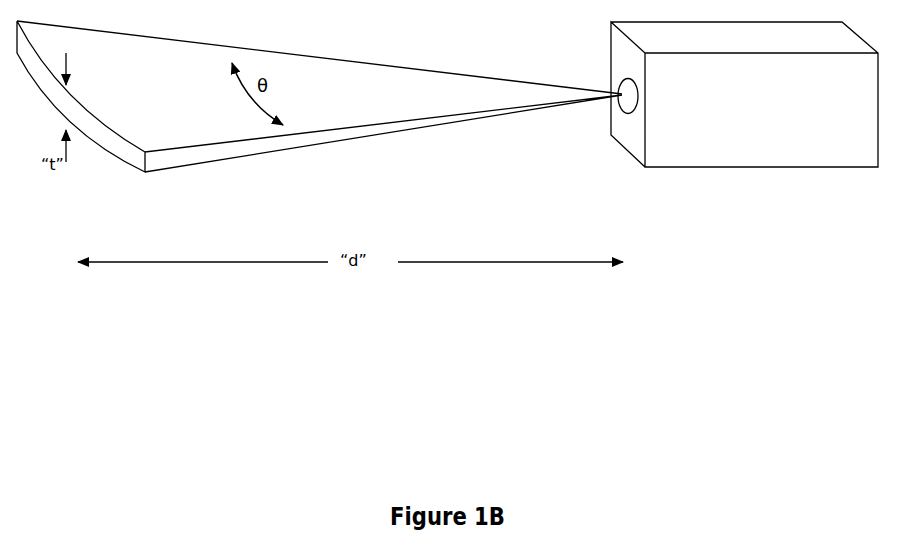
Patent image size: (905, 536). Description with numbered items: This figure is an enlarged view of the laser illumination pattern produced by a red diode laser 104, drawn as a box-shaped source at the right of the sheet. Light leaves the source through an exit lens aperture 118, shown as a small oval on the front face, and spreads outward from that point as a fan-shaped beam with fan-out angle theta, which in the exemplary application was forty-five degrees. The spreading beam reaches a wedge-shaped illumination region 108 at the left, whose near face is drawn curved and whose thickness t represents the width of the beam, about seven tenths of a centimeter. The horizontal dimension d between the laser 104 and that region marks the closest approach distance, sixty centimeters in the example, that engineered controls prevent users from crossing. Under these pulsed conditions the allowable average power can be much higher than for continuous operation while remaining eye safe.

The red diode laser 104 is at (837, 137).
The wedge-shaped light guide / optical element 108 is at (173, 129).
The exit lens aperture 118 is at (600, 123).